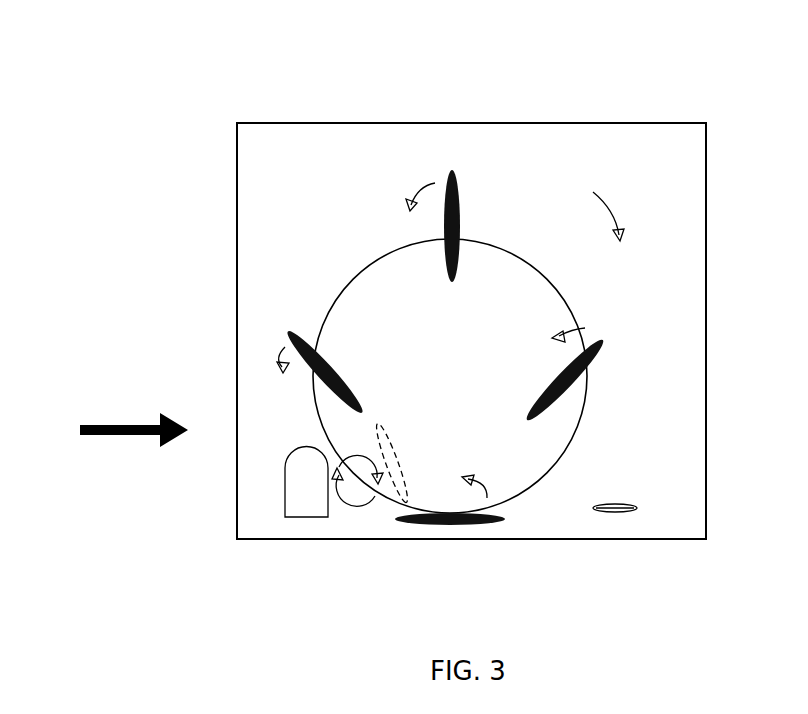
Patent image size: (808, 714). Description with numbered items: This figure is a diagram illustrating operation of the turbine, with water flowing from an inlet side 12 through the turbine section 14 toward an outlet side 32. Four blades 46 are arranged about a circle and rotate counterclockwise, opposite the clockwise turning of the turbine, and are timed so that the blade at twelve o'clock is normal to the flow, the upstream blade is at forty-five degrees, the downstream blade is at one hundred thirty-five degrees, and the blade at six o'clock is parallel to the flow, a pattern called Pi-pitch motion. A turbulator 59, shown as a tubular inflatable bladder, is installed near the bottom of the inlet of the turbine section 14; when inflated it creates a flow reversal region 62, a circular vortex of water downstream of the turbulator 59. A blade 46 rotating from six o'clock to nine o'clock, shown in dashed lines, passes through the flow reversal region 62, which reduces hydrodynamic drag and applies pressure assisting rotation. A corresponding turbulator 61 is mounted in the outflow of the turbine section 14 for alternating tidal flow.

The turbine section 14 is at (569, 86).
The water inlet 12 is at (122, 331).
The water outlet 32 is at (800, 373).
The blades 46 is at (461, 196).
The turbulator 59 is at (285, 487).
The turbulator 61 is at (647, 507).
The flow reversal region 62 is at (359, 512).